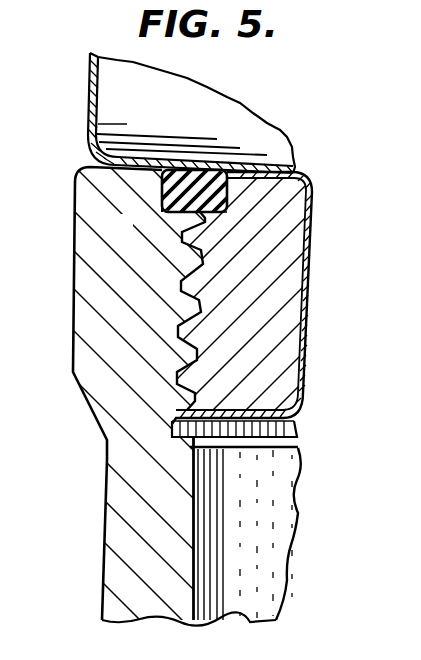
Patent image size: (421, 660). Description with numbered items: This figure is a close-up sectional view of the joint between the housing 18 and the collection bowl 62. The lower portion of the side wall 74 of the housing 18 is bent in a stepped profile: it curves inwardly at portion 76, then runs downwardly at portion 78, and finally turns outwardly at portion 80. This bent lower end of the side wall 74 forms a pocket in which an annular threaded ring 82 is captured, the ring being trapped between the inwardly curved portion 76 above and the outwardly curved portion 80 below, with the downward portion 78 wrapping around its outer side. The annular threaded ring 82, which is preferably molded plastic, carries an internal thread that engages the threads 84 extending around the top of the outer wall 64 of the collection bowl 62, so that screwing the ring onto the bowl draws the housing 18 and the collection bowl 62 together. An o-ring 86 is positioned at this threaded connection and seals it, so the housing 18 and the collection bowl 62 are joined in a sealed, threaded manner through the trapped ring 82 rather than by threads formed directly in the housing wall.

The housing 18 is at (86, 73).
The side wall 74 is at (88, 126).
The inwardly curved portion 76 is at (209, 170).
The downward portion 78 is at (310, 283).
The outward portion 80 is at (248, 410).
The annular threaded ring 82 is at (283, 188).
The threads 84 is at (190, 344).
The o-ring 86 is at (162, 207).
The outer wall 64 is at (106, 473).
The collection bowl 62 is at (98, 517).